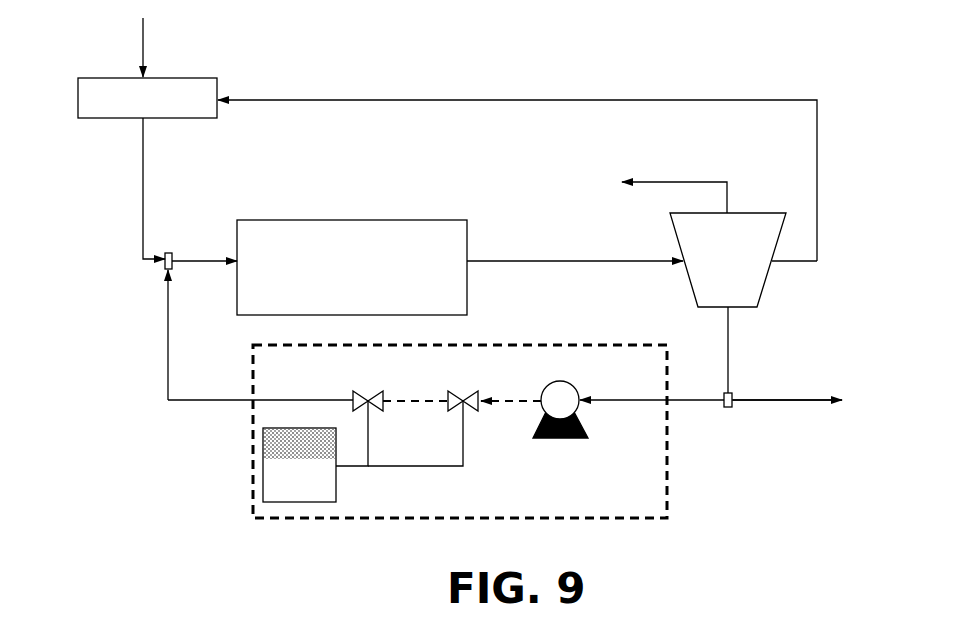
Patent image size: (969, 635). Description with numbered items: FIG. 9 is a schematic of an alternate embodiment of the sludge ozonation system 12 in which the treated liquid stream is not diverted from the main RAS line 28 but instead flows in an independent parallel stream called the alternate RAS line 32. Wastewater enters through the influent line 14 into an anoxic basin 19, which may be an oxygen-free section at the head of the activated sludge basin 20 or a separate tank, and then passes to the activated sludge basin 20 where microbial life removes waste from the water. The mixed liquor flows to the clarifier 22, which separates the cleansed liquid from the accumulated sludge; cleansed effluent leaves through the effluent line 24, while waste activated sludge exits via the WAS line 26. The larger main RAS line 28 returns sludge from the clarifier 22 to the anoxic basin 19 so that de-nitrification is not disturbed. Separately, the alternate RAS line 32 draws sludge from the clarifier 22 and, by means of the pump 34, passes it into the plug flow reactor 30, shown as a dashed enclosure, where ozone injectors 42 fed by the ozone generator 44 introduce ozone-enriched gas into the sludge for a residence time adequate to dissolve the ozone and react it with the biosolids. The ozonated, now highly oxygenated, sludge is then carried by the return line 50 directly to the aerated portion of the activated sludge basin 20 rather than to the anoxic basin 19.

The sludge ozonation system 12 is at (49, 11).
The intake conduit 14 is at (150, 46).
The anoxic basin 19 is at (130, 118).
The activated sludge basin 20 is at (406, 218).
The clarifier 22 is at (766, 275).
The effluent line 24 is at (710, 175).
The waste activated sludge line 26 is at (760, 393).
The main RAS line 28 is at (692, 98).
The plug flow reactor 30 is at (216, 495).
The alternate RAS line 32 is at (690, 401).
The pump 34 is at (583, 427).
The ozone injectors 42 is at (353, 394).
The ozone generator 44 is at (276, 473).
The return line 50 is at (166, 371).